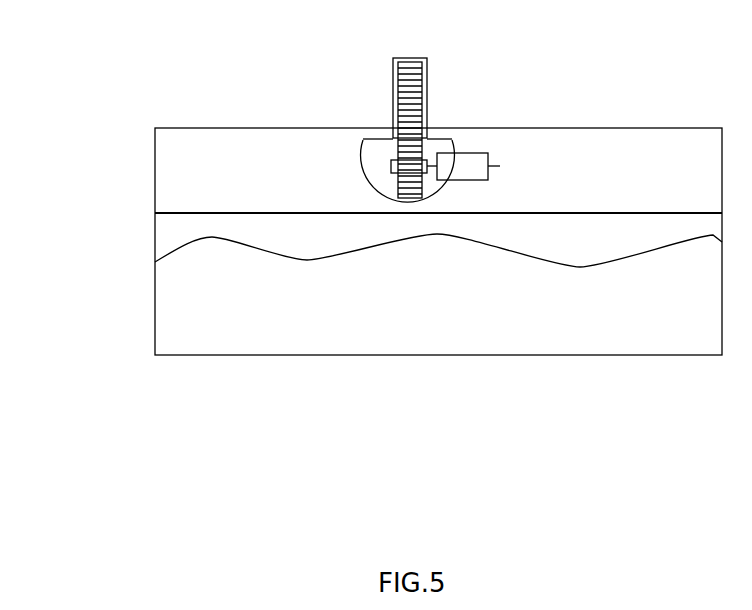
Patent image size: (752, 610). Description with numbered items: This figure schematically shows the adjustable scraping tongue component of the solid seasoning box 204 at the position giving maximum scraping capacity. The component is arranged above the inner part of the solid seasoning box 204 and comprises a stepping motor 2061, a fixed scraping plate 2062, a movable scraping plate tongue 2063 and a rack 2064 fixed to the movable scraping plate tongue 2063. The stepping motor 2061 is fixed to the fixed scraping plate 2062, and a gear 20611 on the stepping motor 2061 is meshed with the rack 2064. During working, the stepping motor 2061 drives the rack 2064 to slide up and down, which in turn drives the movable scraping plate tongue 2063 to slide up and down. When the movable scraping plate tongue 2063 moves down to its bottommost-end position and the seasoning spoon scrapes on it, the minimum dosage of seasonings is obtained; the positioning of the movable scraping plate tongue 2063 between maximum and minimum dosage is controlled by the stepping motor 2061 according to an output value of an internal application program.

The solid seasoning box 204 is at (370, 241).
The fixed scraping plate 2062 is at (399, 141).
The movable scraping plate tongue 2063 is at (334, 136).
The rack 2064 is at (484, 117).
The gear 20611 is at (335, 95).
The stepping motor 2061 is at (538, 126).